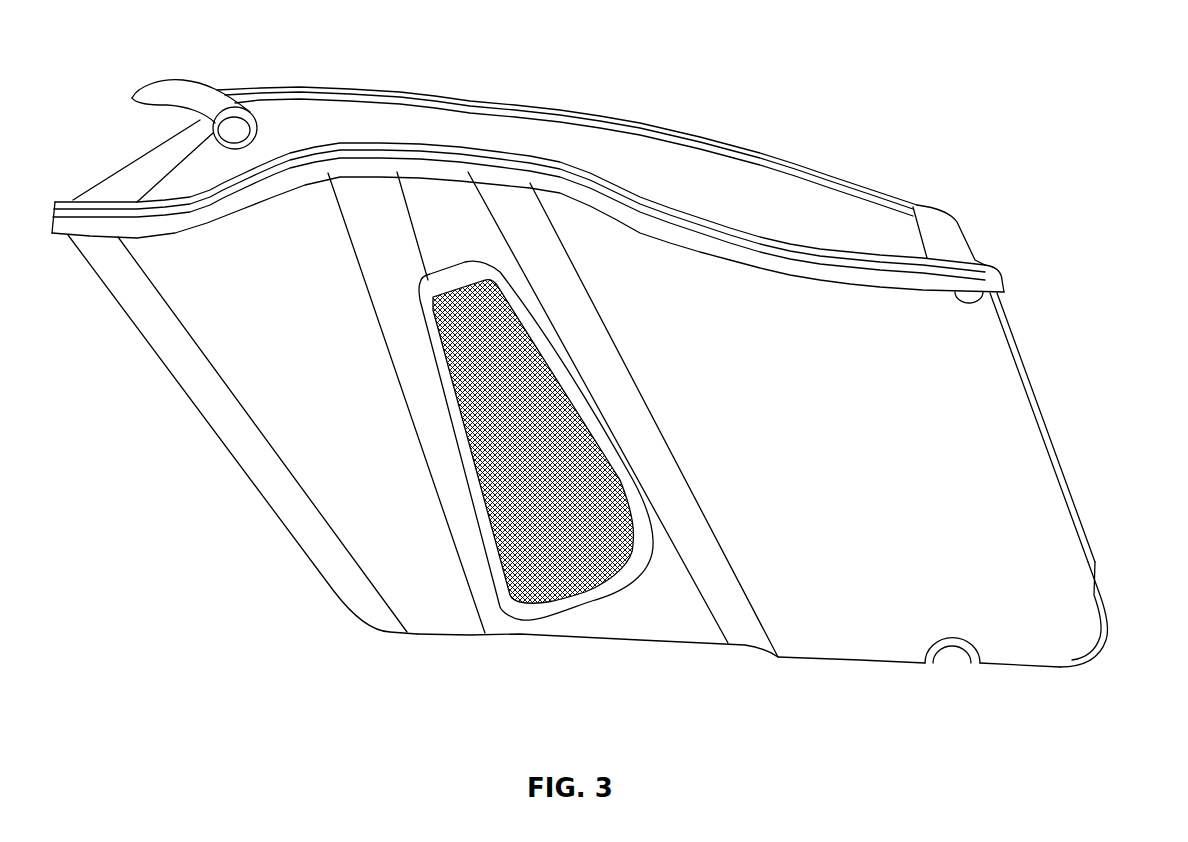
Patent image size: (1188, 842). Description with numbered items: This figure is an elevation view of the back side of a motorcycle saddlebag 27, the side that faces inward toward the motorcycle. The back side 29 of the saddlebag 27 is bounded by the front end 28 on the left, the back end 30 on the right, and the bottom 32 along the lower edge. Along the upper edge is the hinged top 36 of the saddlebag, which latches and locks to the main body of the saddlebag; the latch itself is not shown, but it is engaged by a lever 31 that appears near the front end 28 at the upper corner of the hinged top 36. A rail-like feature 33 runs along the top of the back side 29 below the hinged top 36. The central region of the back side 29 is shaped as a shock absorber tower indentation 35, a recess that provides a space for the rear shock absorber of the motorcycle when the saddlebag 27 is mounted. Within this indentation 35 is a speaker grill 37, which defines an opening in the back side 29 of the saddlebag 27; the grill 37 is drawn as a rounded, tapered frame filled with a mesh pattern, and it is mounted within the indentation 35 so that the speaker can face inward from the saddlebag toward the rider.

The saddlebag 27 is at (813, 170).
The front end 28 is at (240, 468).
The back side 29 is at (1017, 450).
The back end 30 is at (1098, 570).
The lever 31 is at (167, 80).
The bottom 32 is at (857, 663).
The intermediate rail 33 is at (997, 290).
The shock absorber tower indentation 35 is at (685, 625).
The hinged top 36 is at (317, 120).
The speaker grill 37 is at (467, 262).